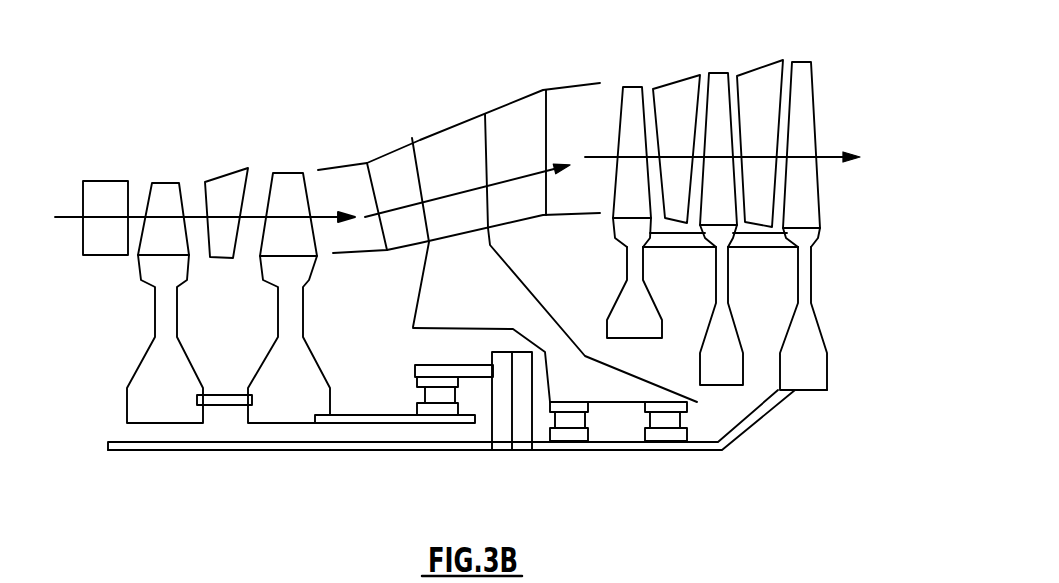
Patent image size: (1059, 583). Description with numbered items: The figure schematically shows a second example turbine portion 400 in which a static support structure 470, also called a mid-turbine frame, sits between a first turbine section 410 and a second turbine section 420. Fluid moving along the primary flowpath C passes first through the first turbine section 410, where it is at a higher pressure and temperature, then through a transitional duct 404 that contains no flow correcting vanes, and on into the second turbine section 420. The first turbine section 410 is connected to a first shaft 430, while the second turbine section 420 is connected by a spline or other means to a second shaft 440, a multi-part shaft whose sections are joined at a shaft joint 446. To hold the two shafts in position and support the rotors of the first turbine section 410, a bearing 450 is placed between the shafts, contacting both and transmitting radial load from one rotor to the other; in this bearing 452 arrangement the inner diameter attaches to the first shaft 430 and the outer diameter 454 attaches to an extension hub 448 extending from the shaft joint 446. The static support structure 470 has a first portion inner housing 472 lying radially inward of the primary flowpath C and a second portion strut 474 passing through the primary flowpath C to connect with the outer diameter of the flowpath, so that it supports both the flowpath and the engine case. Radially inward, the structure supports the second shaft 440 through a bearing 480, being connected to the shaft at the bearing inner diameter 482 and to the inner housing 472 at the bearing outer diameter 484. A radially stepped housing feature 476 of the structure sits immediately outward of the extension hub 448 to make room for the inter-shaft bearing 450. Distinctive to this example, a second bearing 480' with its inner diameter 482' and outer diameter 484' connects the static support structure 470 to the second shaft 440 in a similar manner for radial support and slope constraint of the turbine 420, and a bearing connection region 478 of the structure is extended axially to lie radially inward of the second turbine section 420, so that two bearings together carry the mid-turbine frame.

The turbine portion 400 is at (307, 107).
The transitional duct 404 is at (392, 170).
The first turbine section 410 is at (203, 167).
The second turbine section 420 is at (717, 57).
The first shaft 430 is at (337, 423).
The second shaft 440 is at (740, 437).
The shaft joint 446 is at (515, 420).
The extension hub 448 is at (450, 365).
The bearing 450 is at (446, 400).
The bearing 452 is at (428, 415).
The outer diameter of the bearing 454 is at (427, 377).
The static support structure 470 is at (513, 292).
The first portion inner housing 472 is at (477, 260).
The second portion strut 474 is at (474, 176).
The radially stepped housing feature 476 is at (437, 340).
The bearing connection region 478 is at (623, 380).
The bearing 480 is at (602, 445).
The inner diameter of the bearing 482 is at (589, 464).
The outer diameter of the bearing 484 is at (597, 390).
The second bearing 480' is at (704, 408).
The inner diameter of the second bearing 482' is at (688, 456).
The outer diameter of the second bearing 484' is at (669, 377).
The primary flowpath C is at (603, 157).